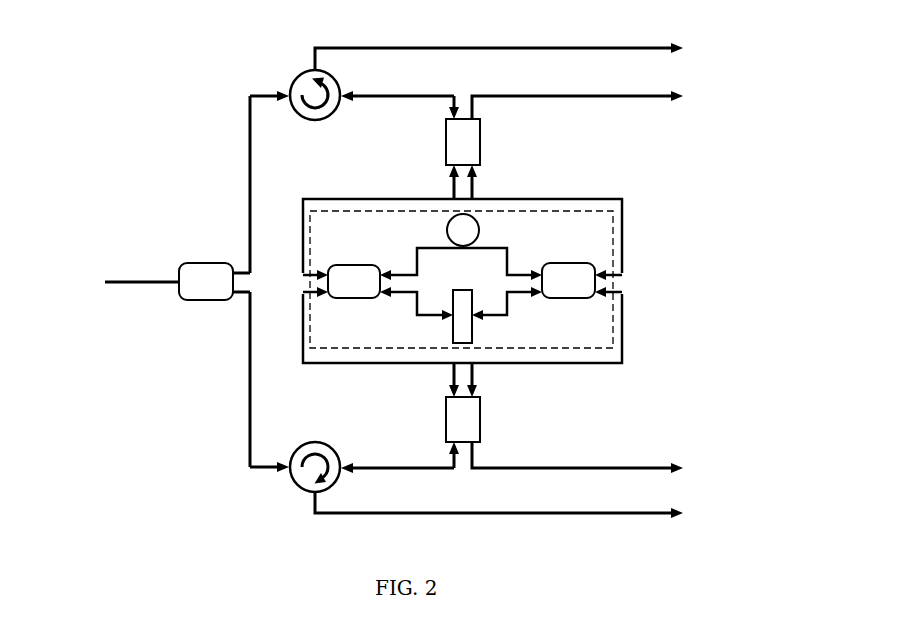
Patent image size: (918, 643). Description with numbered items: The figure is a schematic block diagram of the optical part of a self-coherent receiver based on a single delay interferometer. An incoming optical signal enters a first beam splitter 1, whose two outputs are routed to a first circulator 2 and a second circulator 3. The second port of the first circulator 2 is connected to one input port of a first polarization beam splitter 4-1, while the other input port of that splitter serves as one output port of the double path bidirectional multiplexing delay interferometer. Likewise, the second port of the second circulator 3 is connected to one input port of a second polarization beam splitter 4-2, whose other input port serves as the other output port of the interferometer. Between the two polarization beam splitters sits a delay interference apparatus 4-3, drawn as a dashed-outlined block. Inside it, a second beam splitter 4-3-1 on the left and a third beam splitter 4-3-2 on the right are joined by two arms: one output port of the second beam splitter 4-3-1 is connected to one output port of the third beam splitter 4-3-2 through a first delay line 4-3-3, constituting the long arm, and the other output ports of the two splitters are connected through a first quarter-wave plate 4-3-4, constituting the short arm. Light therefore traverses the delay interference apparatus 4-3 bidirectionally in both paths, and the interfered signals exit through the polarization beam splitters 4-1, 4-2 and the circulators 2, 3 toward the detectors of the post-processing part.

The first beam splitter 1 is at (207, 300).
The first circulator 2 is at (297, 72).
The second circulator 3 is at (300, 492).
The first polarization beam splitter 4-1 is at (580, 185).
The second polarization beam splitter 4-2 is at (578, 458).
The delay interference apparatus 4-3 is at (615, 199).
The second beam splitter 4-3-1 is at (352, 265).
The third beam splitter 4-3-2 is at (700, 342).
The first delay line 4-3-3 is at (447, 222).
The first quarter-wave plate 4-3-4 is at (462, 345).